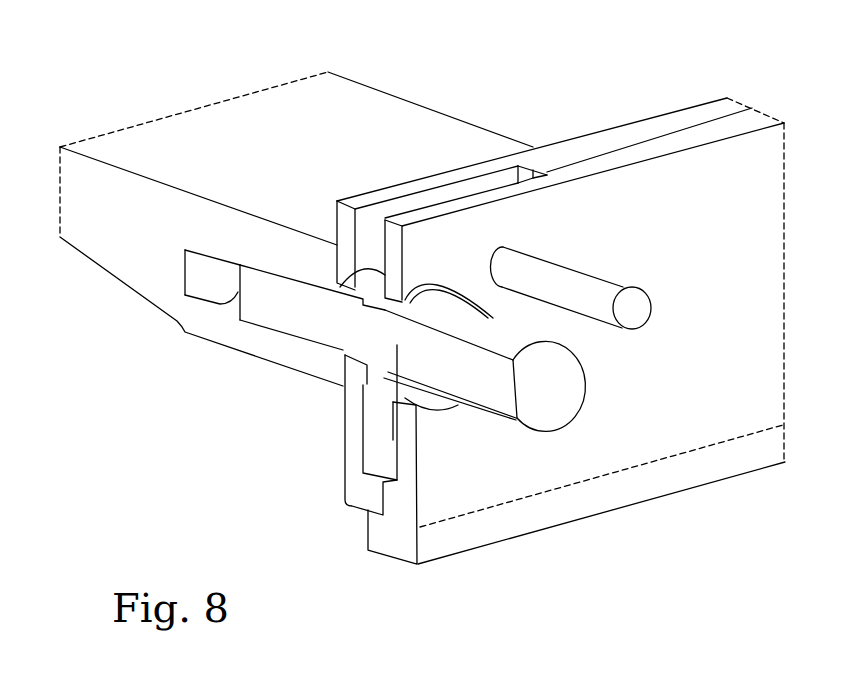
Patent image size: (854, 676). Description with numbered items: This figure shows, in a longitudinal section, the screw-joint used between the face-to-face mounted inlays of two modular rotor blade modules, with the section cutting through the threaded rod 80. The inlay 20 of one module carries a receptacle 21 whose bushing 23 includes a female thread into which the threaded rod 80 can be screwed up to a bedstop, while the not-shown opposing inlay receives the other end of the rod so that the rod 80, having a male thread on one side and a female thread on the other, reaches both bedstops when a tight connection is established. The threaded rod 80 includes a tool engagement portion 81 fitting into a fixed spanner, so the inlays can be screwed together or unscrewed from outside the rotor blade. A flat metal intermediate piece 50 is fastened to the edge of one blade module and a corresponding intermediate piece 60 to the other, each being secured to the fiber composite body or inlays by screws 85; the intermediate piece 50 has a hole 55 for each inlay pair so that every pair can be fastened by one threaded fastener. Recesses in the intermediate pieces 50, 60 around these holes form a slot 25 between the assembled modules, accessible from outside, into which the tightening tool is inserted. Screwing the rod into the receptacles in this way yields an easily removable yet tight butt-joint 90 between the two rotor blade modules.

The inlay 20 is at (193, 110).
The receptacle 21 is at (187, 317).
The bushing 23 is at (213, 280).
The slot 25 is at (422, 200).
The intermediate piece 50 is at (655, 147).
The hole 55 is at (463, 287).
The intermediate piece 60 is at (575, 140).
The threaded rod 80 is at (305, 317).
The tool engagement portion 81 is at (375, 317).
The screw 85 is at (630, 308).
The butt-joint 90 is at (710, 123).